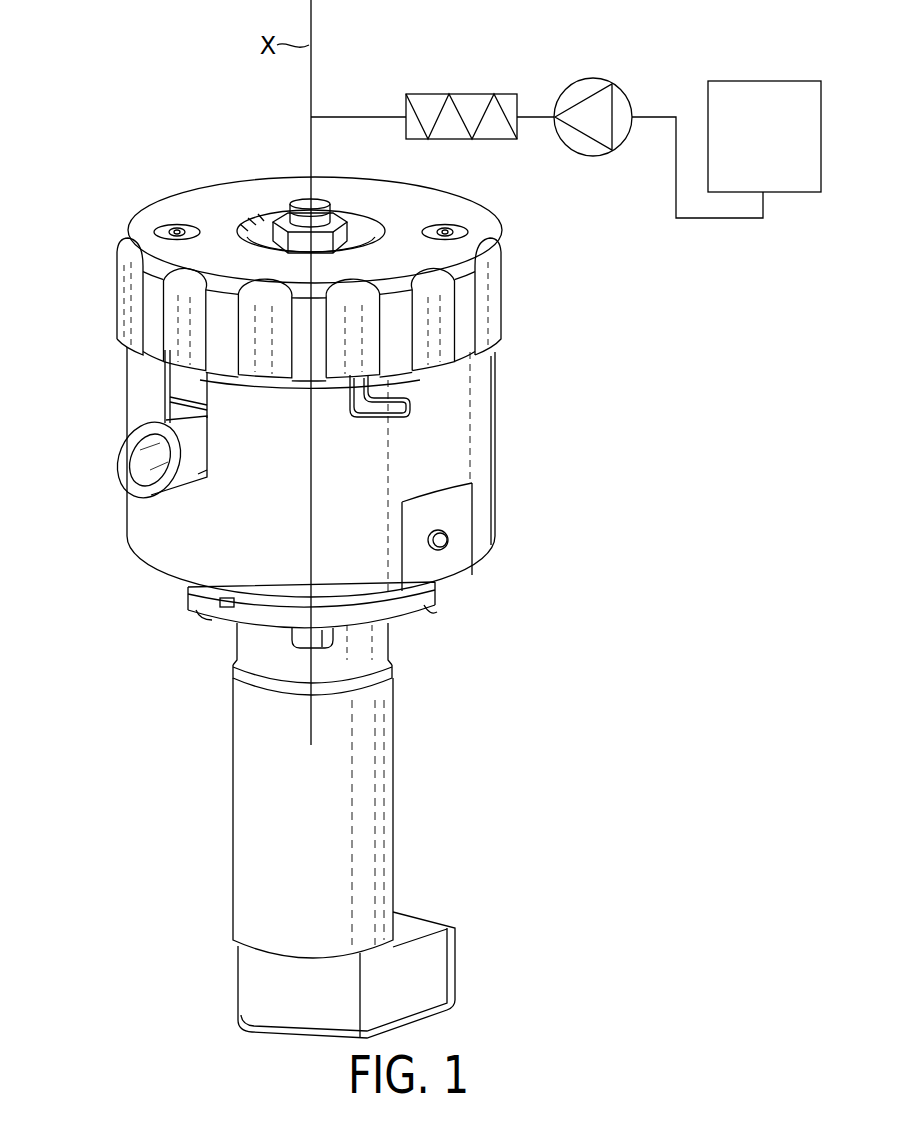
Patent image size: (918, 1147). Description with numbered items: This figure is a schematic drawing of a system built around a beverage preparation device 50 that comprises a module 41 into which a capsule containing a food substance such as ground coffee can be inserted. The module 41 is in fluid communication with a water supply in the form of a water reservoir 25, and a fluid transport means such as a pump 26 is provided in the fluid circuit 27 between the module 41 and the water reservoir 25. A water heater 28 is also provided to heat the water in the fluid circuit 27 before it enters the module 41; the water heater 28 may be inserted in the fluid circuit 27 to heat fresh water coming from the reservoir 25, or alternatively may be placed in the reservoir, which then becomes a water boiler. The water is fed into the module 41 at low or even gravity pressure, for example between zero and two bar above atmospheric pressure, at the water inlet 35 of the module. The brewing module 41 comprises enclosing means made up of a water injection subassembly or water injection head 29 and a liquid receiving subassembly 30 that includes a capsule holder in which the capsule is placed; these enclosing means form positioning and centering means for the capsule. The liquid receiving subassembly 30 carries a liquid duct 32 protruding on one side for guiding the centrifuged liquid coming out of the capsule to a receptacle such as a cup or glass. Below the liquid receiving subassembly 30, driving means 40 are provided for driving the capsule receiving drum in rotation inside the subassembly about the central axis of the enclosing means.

The water reservoir 25 is at (767, 81).
The pump 26 is at (594, 78).
The fluid circuit 27 is at (362, 117).
The water heater 28 is at (462, 94).
The water injection head 29 is at (100, 282).
The liquid receiving subassembly 30 is at (508, 439).
The liquid duct 32 is at (122, 460).
The water inlet 35 is at (303, 201).
The driving means 40 is at (245, 818).
The module 41 is at (508, 547).
The beverage preparation device 50 is at (188, 178).